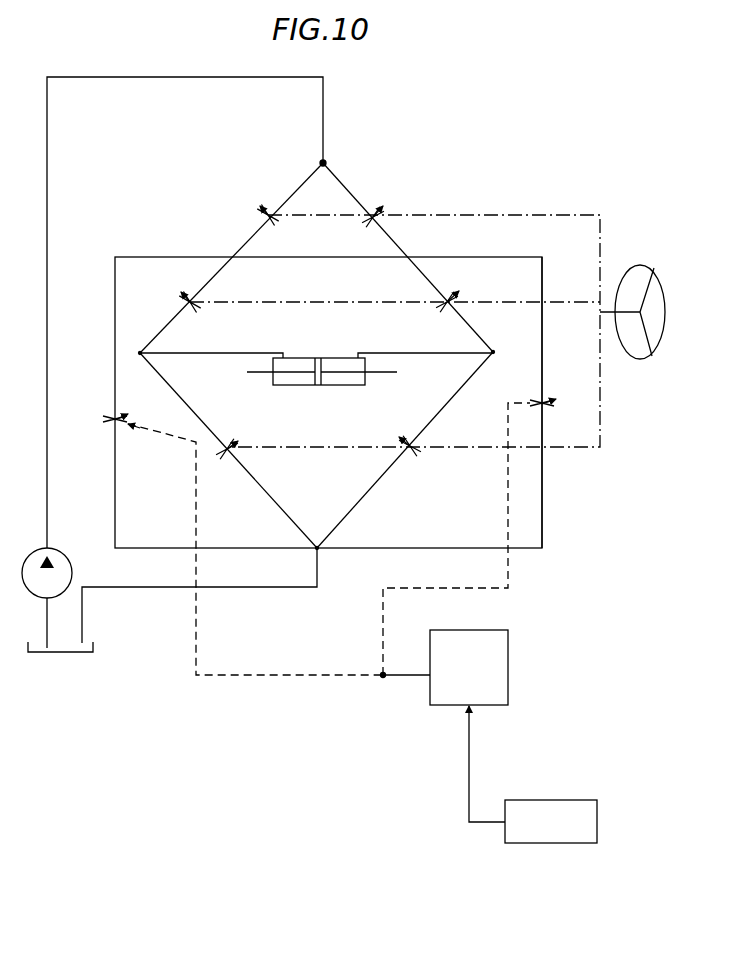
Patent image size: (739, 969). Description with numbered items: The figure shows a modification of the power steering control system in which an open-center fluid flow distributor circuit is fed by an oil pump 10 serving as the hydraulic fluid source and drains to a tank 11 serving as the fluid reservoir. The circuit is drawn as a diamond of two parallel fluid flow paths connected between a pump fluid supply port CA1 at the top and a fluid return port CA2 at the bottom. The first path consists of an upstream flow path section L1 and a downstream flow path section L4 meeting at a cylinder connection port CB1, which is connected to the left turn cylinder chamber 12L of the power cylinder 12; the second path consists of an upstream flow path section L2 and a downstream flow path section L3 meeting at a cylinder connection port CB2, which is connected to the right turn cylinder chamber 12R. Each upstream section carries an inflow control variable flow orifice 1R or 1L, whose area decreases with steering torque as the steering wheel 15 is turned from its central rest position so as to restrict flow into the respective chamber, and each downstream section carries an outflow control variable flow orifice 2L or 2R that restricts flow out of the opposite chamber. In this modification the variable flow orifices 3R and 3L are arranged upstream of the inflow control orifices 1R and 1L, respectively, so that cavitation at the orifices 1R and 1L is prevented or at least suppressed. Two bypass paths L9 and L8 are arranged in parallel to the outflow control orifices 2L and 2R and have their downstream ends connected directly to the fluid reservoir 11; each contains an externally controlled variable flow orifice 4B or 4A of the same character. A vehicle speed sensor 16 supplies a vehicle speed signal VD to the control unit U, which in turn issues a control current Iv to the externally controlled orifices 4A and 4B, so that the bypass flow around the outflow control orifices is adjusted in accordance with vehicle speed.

The inflow control variable flow orifice 1R is at (198, 314).
The inflow control variable flow orifice 1L is at (446, 315).
The outflow control variable flow orifice 2R is at (411, 459).
The outflow control variable flow orifice 2L is at (225, 465).
The variable flow orifice 3R is at (262, 205).
The variable flow orifice 3L is at (380, 204).
The externally controlled variable flow orifice 4A is at (555, 393).
The externally controlled variable flow orifice 4B is at (104, 408).
The oil pump 10 is at (71, 566).
The tank 11 is at (93, 647).
The power cylinder 12 is at (311, 358).
The left turn cylinder chamber 12L is at (293, 386).
The right turn cylinder chamber 12R is at (343, 386).
The steering wheel 15 is at (641, 360).
The vehicle speed sensor 16 is at (548, 800).
The control unit U is at (508, 675).
The valve control current Iv is at (329, 540).
The vehicle speed signal VD is at (487, 765).
The upstream flow path section L1 is at (304, 183).
The upstream flow path section L2 is at (341, 181).
The downstream flow path section L3 is at (465, 386).
The downstream flow path section L4 is at (172, 391).
The bypass path L8 is at (543, 280).
The bypass path L9 is at (115, 288).
The pump fluid supply port CA1 is at (324, 162).
The fluid return port CA2 is at (319, 550).
The cylinder connection port CB1 is at (140, 352).
The cylinder connection port CB2 is at (494, 351).